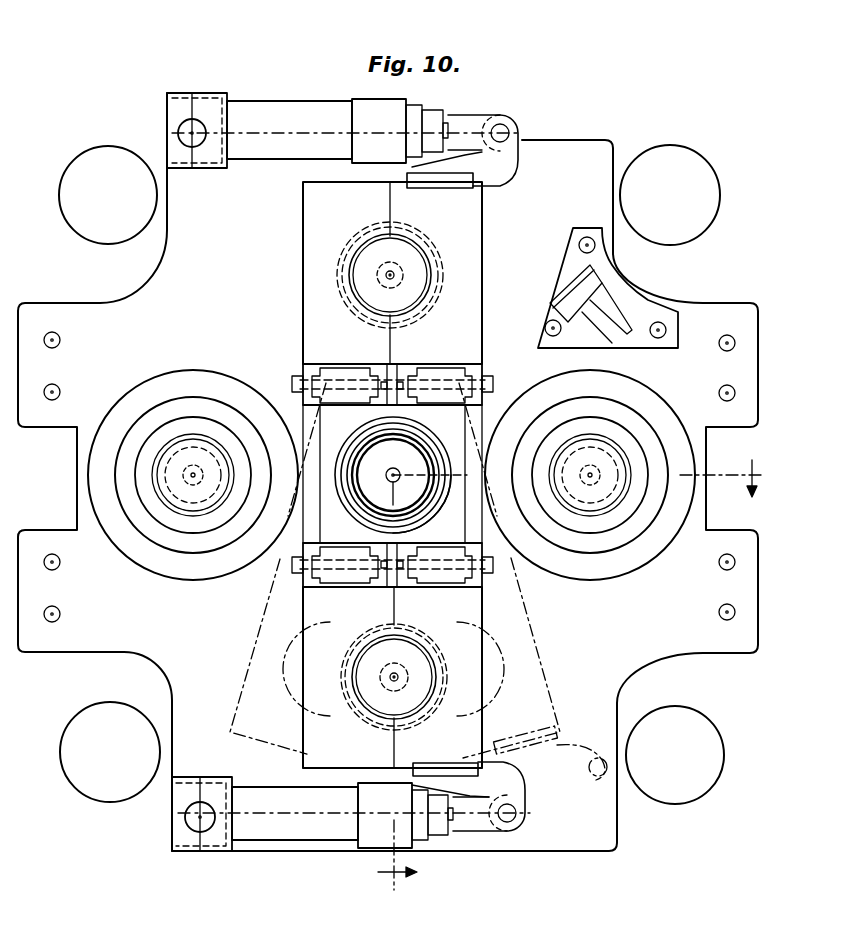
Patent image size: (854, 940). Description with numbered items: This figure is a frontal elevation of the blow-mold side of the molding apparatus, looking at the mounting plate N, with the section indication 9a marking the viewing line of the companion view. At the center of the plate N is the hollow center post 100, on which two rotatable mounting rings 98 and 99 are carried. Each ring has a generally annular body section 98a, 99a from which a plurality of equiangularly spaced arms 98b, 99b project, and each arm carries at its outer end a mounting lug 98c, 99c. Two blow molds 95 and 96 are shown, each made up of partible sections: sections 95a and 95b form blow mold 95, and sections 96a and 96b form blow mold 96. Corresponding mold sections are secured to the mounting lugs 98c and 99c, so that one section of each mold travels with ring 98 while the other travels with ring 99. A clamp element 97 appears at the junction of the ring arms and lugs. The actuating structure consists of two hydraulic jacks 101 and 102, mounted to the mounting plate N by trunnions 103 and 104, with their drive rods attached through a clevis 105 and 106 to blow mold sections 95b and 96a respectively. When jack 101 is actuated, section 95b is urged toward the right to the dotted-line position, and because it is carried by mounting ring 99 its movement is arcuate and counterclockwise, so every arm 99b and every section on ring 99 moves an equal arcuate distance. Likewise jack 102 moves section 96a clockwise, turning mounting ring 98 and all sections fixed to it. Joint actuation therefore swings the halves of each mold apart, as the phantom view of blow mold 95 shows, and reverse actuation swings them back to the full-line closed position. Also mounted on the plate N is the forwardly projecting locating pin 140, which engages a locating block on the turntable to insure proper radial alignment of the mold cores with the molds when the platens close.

The mounting plate N is at (162, 276).
The blow mold 95 is at (278, 657).
The blow mold section 95a is at (307, 758).
The blow mold section 95b is at (500, 763).
The blow mold 96 is at (290, 222).
The blow mold section 96a is at (483, 208).
The blow mold section 96b is at (303, 249).
The clamp bar 97 is at (302, 367).
The mounting ring 98 is at (323, 514).
The annular body section 98a is at (457, 529).
The arm 98b is at (440, 438).
The mounting lug 98c is at (482, 362).
The mounting ring 99 is at (326, 421).
The annular body section 99a is at (467, 448).
The arm 99b is at (336, 447).
The mounting lug 99c is at (340, 366).
The hollow center post 100 is at (465, 420).
The hydraulic jack 101 is at (277, 830).
The hydraulic jack 102 is at (287, 108).
The trunnion 103 is at (195, 822).
The trunnion 104 is at (186, 128).
The clevis 105 is at (510, 816).
The clevis 106 is at (507, 128).
The locating pin 140 is at (592, 278).
The section line 9a is at (574, 663).